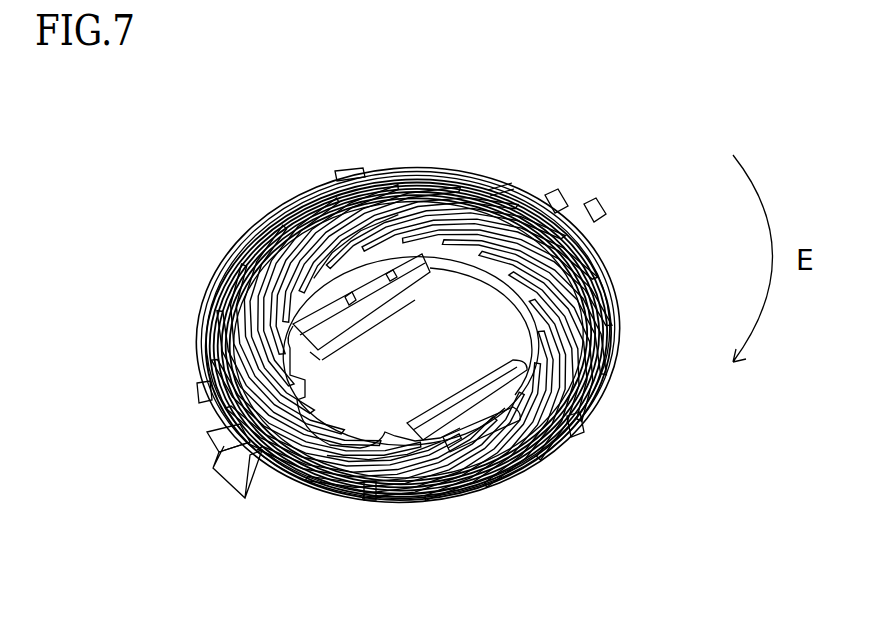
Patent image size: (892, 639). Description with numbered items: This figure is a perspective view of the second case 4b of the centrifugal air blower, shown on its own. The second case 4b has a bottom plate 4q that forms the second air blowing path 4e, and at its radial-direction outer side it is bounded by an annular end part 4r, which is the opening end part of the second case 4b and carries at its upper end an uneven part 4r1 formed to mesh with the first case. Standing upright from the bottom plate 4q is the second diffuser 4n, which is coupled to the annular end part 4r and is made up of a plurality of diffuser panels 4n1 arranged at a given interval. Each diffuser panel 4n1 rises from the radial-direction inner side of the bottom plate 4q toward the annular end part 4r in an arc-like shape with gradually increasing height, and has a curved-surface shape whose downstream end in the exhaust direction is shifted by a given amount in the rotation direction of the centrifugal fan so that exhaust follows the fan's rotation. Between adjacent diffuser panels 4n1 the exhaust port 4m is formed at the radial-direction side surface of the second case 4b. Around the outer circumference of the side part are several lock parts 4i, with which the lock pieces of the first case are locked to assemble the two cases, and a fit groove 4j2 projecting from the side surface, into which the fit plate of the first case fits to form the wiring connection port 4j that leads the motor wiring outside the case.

The second case 4b is at (622, 310).
The second air blowing path 4e is at (612, 338).
The lock part 4i is at (598, 214).
The wiring connection port 4j is at (212, 463).
The fit groove 4j2 is at (207, 443).
The exhaust port 4m is at (262, 262).
The second diffuser 4n is at (450, 192).
The diffuser panels 4n1 is at (332, 214).
The bottom plate 4q is at (220, 296).
The annular end part 4r is at (538, 204).
The uneven part 4r1 is at (500, 188).